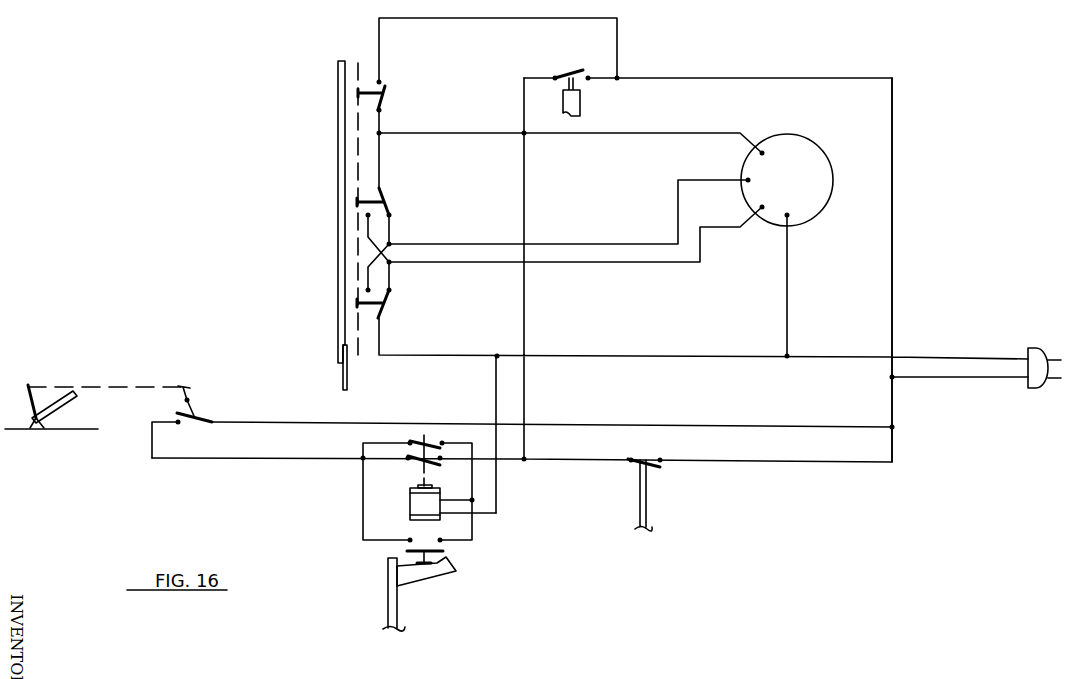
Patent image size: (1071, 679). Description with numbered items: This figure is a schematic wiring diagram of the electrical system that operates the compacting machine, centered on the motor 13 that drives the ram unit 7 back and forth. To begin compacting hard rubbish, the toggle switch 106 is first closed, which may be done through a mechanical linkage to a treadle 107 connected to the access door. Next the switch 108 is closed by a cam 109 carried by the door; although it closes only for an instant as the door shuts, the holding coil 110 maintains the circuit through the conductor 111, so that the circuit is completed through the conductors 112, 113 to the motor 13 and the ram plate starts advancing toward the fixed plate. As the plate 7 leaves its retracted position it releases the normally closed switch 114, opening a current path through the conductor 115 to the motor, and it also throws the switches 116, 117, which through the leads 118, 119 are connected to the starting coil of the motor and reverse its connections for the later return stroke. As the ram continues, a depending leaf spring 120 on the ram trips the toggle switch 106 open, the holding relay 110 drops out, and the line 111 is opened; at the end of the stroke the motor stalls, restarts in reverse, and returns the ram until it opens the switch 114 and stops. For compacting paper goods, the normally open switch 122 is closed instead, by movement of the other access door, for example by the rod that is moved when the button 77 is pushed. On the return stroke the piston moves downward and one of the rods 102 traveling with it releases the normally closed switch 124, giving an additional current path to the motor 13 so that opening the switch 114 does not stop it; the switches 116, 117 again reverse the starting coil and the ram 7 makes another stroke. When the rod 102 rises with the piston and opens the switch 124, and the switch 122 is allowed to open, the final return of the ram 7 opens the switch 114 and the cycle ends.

The ram unit 7 is at (340, 257).
The motor 13 is at (808, 199).
The button 77 is at (648, 512).
The rod 102 is at (575, 103).
The toggle switch 106 is at (200, 418).
The treadle 107 is at (66, 402).
The switch 108 is at (447, 547).
The cam 109 is at (455, 563).
The holding coil 110 is at (413, 503).
The conductor 111 is at (300, 459).
The conductor 112 is at (678, 133).
The conductor 113 is at (795, 287).
The normally closed switch 114 is at (385, 88).
The conductor 115 is at (893, 163).
The switch 116 is at (386, 200).
The switch 117 is at (387, 306).
The lead 118 is at (648, 245).
The lead 119 is at (580, 263).
The leaf spring 120 is at (347, 385).
The normally open switch 122 is at (658, 466).
The normally closed switch 124 is at (581, 70).